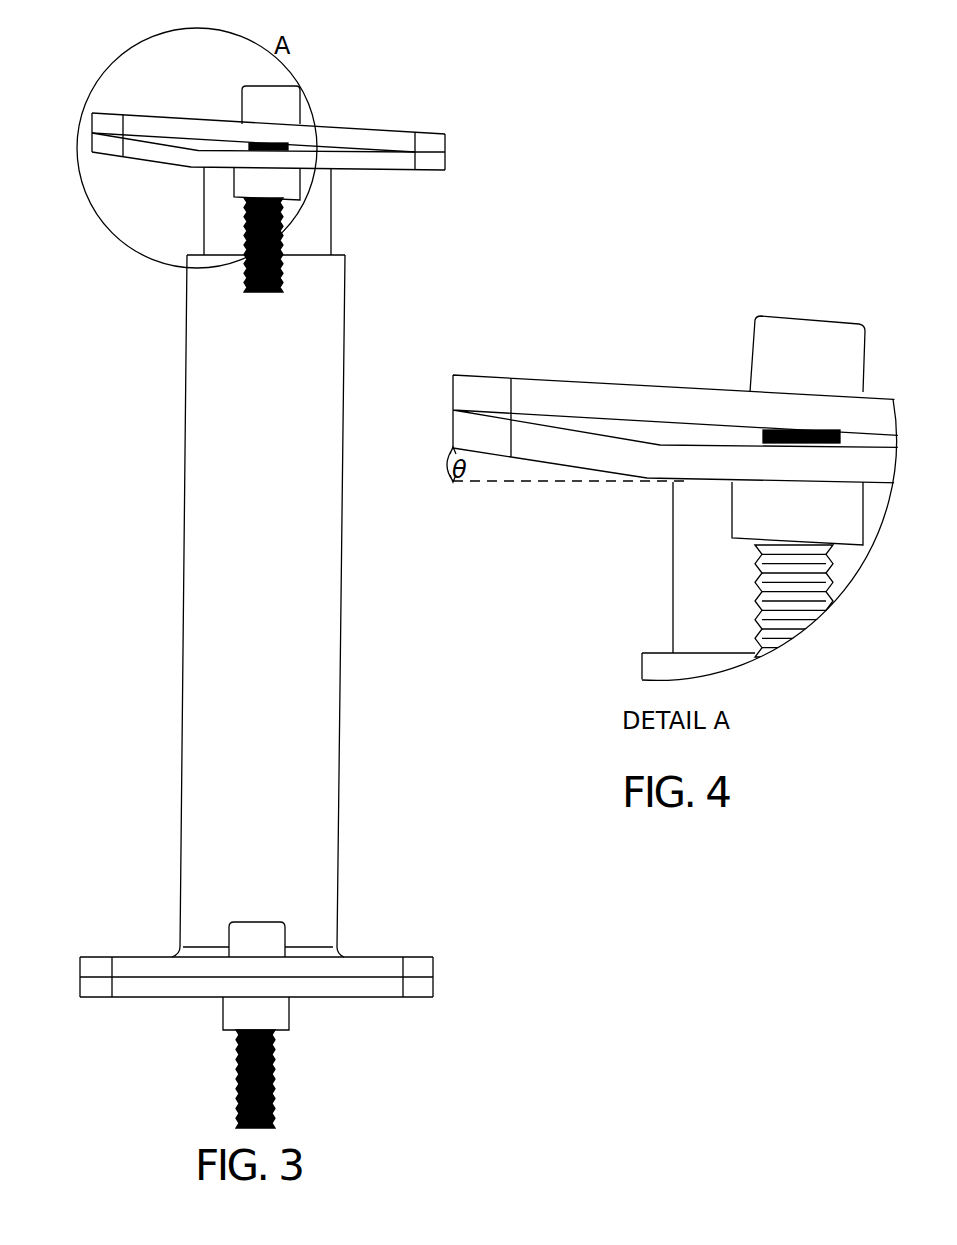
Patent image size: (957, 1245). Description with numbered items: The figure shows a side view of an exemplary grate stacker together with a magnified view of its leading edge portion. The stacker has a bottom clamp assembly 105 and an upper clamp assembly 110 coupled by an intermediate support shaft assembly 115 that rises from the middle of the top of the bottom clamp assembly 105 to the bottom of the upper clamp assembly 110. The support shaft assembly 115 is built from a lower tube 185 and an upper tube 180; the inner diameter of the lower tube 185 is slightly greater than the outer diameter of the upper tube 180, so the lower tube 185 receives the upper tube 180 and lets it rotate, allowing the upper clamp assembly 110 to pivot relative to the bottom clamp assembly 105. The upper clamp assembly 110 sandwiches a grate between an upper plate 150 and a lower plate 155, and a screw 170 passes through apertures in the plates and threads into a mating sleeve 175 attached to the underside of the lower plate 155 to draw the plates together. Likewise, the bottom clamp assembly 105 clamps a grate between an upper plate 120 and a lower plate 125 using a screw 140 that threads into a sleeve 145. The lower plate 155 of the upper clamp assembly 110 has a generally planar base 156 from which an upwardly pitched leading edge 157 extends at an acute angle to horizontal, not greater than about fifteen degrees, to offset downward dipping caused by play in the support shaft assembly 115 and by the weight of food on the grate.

The bottom clamp assembly 105 is at (435, 978).
The upper clamp assembly 110 is at (448, 152).
The intermediate support shaft assembly 115 is at (342, 633).
The upper plate 120 is at (365, 970).
The lower plate 125 is at (365, 990).
The screw 140 is at (240, 942).
The sleeve 145 is at (238, 1008).
The upper plate 150 is at (378, 128).
The lower plate 155 is at (373, 164).
The generally planar base 156 is at (213, 158).
The upwardly pitched leading edge 157 is at (137, 153).
The screw 170 is at (277, 110).
The sleeve 175 is at (248, 182).
The upper tube 180 is at (318, 223).
The lower tube 185 is at (327, 432).